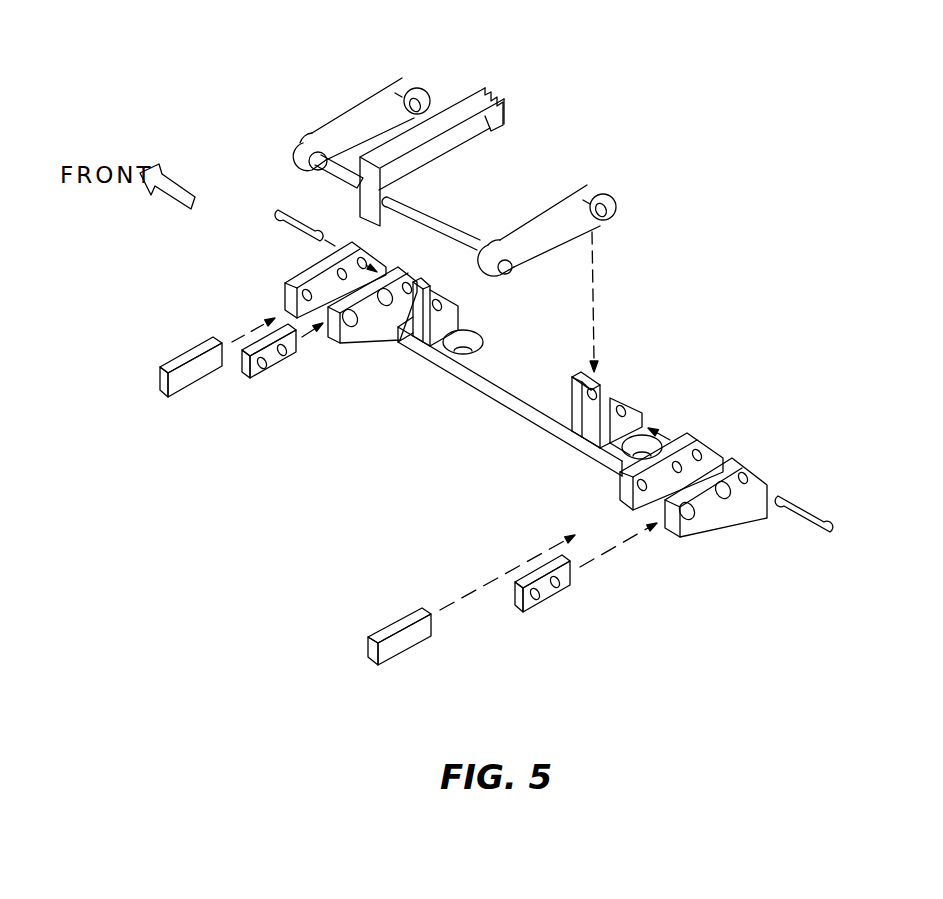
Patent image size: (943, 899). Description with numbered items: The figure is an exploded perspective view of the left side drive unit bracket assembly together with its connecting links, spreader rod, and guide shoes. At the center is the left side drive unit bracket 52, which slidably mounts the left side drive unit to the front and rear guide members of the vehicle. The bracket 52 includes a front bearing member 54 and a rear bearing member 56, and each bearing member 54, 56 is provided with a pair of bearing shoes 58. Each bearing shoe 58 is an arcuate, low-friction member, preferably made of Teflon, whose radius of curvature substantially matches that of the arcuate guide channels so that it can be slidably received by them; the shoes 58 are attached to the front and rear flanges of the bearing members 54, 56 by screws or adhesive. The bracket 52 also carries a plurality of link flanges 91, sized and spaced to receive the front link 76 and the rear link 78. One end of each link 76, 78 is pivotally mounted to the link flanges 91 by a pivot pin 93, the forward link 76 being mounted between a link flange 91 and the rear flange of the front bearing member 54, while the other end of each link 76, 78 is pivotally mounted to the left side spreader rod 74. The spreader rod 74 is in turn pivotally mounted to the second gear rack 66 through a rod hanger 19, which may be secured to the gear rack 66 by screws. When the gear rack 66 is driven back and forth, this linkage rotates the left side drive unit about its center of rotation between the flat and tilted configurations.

The rod hanger 19 is at (359, 205).
The left side drive unit bracket 52 is at (510, 414).
The front bearing member 54 is at (307, 309).
The rear bearing member 56 is at (683, 513).
The bearing shoe 58 is at (250, 380).
The second gear rack 66 is at (495, 92).
The left side spreader rod 74 is at (438, 222).
The front link 76 is at (347, 108).
The rear link 78 is at (540, 214).
The link flange 91 is at (460, 308).
The pivot pin 93 is at (287, 208).